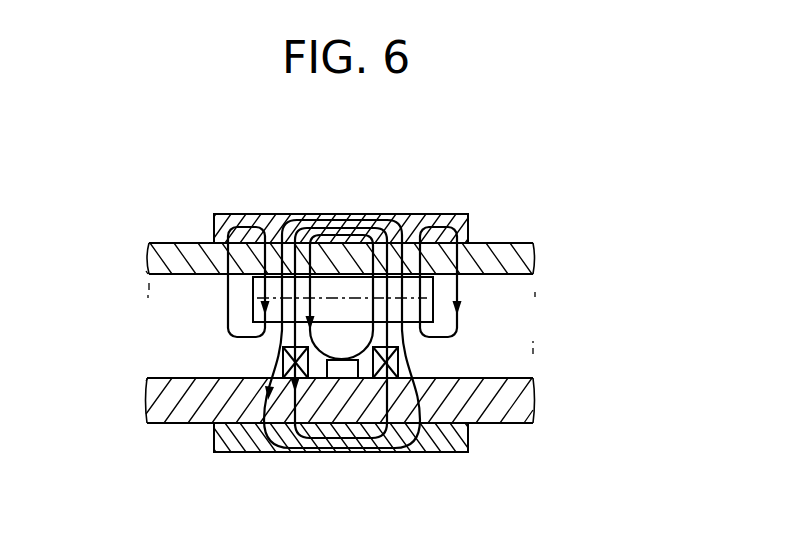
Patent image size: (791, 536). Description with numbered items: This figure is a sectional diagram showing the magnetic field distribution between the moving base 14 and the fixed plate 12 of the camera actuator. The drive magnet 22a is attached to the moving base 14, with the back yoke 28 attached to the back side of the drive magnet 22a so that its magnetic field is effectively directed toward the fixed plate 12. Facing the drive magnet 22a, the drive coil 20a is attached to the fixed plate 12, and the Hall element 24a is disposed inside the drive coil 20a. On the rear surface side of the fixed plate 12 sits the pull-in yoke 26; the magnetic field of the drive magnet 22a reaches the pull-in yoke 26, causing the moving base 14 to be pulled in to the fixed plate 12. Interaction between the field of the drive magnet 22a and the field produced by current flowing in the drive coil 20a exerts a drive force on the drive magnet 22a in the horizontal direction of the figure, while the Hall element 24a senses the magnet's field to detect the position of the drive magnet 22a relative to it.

The fixed plate 12 is at (513, 405).
The moving base 14 is at (195, 260).
The drive coil 20a is at (398, 365).
The drive magnet 22a is at (253, 305).
The Hall element 24a is at (342, 370).
The pull-in yoke 26 is at (443, 438).
The back yoke 28 is at (310, 215).